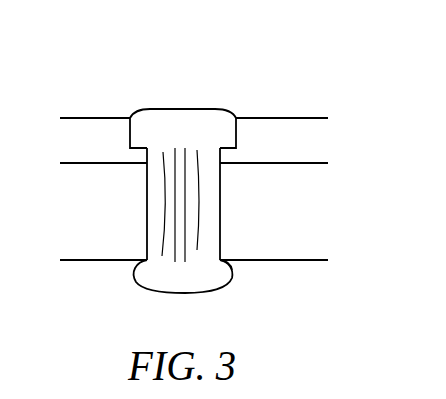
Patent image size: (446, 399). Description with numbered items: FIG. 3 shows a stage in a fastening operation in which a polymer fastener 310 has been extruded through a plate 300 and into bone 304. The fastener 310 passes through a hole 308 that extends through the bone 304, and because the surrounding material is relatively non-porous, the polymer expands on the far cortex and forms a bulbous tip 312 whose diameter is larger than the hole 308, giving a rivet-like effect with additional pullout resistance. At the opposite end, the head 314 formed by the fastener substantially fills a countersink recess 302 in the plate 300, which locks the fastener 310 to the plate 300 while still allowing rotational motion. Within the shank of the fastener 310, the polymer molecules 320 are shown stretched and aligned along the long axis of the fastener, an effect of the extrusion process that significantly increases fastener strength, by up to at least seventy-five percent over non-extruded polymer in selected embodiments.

The plate 300 is at (270, 124).
The countersink recess 302 is at (237, 147).
The bone 304 is at (288, 240).
The hole 308 is at (225, 238).
The fastener 310 is at (153, 195).
The bulbous tip 312 is at (160, 277).
The head 314 is at (177, 129).
The polymer molecules 320 is at (187, 212).